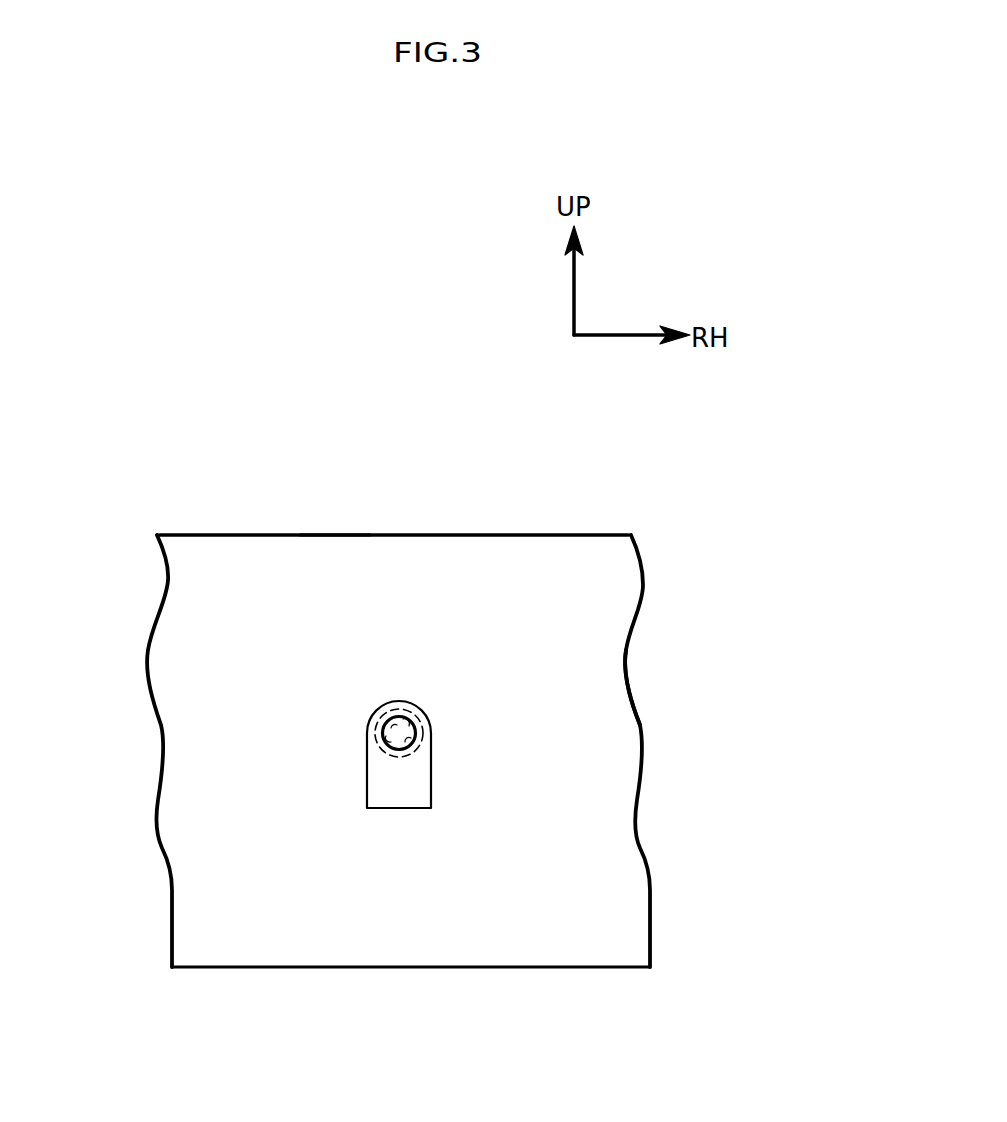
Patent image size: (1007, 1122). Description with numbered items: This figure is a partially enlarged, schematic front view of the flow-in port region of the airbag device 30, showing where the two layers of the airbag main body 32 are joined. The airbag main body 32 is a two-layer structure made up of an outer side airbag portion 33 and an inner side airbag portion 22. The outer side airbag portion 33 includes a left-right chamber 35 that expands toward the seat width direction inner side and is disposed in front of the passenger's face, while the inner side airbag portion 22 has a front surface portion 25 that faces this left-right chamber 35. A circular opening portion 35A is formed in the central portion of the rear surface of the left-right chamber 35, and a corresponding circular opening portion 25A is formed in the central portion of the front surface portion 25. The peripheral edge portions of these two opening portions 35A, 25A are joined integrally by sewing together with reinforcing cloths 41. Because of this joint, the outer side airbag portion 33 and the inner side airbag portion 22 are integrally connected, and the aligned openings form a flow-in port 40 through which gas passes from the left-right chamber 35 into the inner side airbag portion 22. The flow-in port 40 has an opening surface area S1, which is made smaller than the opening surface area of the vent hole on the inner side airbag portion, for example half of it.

The airbag device 30 is at (150, 485).
The airbag main body 32 is at (581, 515).
The outer side airbag portion 33 is at (333, 535).
The inner side airbag portion 22 is at (625, 637).
The front surface portion 25 is at (580, 776).
The left-right chamber 35 is at (258, 612).
The opening portion 25A is at (413, 722).
The flow-in port 40 is at (397, 750).
The reinforcing cloths 41 is at (408, 748).
The opening surface area S1 is at (418, 742).
The opening portion 35A is at (393, 752).